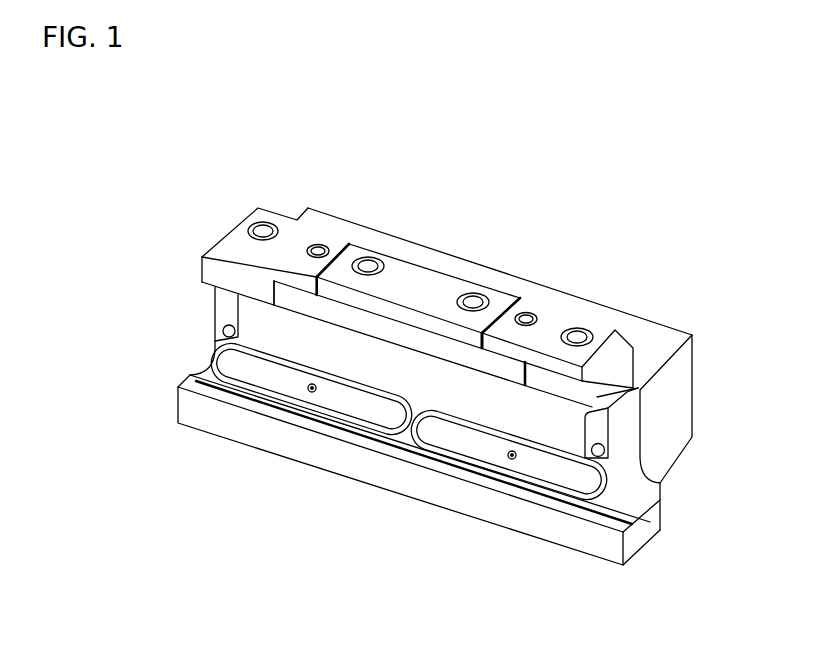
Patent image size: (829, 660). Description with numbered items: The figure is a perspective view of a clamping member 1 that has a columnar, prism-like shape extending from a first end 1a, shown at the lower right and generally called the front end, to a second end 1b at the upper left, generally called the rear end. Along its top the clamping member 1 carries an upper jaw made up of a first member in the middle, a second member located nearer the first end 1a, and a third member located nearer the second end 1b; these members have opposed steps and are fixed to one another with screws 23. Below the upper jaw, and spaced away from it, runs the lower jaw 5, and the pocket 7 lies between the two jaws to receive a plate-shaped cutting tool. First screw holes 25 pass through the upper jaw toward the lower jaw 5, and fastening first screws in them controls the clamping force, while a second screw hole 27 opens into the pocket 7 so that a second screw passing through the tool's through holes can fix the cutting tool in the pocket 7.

The clamping member 1 is at (214, 134).
The first end 1a is at (648, 533).
The second end 1b is at (190, 377).
The lower jaw 5 is at (333, 463).
The pocket 7 is at (417, 392).
The screw 23 is at (318, 248).
The first screw hole 25 is at (262, 230).
The second screw hole 27 is at (598, 457).